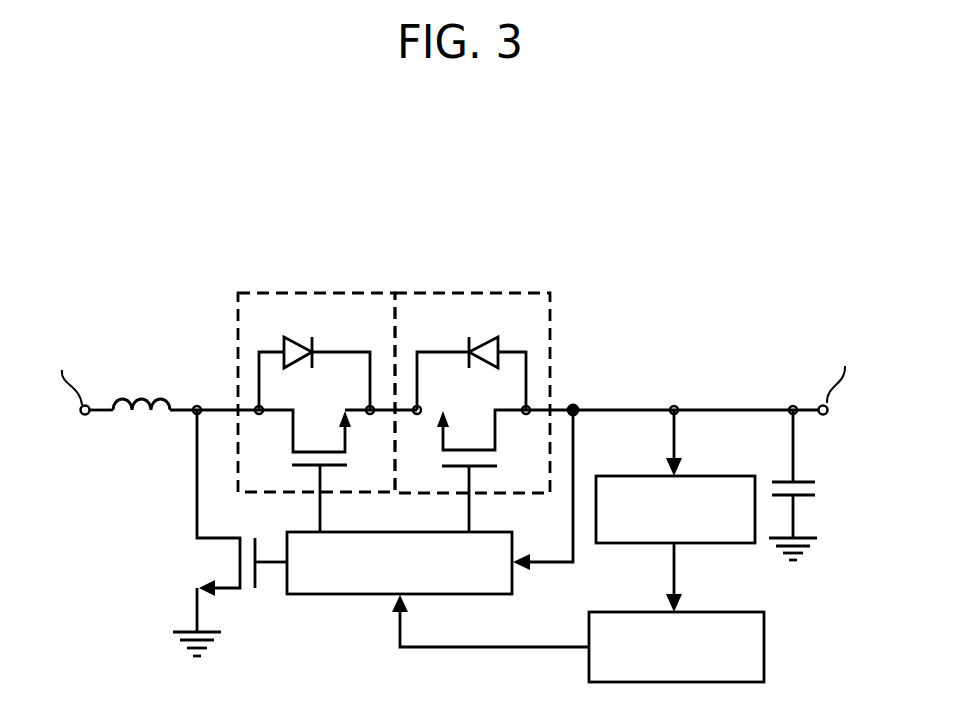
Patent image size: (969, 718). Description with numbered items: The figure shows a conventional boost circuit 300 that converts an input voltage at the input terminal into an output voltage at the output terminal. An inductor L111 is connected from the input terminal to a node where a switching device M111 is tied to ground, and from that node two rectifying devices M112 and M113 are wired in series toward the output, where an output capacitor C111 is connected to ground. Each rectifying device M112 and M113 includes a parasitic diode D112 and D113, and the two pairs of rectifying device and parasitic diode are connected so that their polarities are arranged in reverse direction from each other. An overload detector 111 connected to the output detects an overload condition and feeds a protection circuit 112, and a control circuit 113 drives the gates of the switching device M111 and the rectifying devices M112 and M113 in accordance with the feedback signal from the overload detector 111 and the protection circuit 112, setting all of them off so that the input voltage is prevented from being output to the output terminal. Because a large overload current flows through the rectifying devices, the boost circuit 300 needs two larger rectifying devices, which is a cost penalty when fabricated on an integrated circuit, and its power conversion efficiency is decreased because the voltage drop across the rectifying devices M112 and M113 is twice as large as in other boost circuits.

The boost circuit 300 is at (652, 258).
The inductor L111 is at (141, 385).
The switching device M111 is at (230, 533).
The rectifying device M112 is at (353, 306).
The rectifying device M113 is at (530, 306).
The parasitic diode D112 is at (314, 360).
The parasitic diode D113 is at (471, 360).
The output capacitor C111 is at (811, 485).
The overload detector 111 is at (709, 475).
The protection circuit 112 is at (709, 611).
The control circuit 113 is at (332, 596).